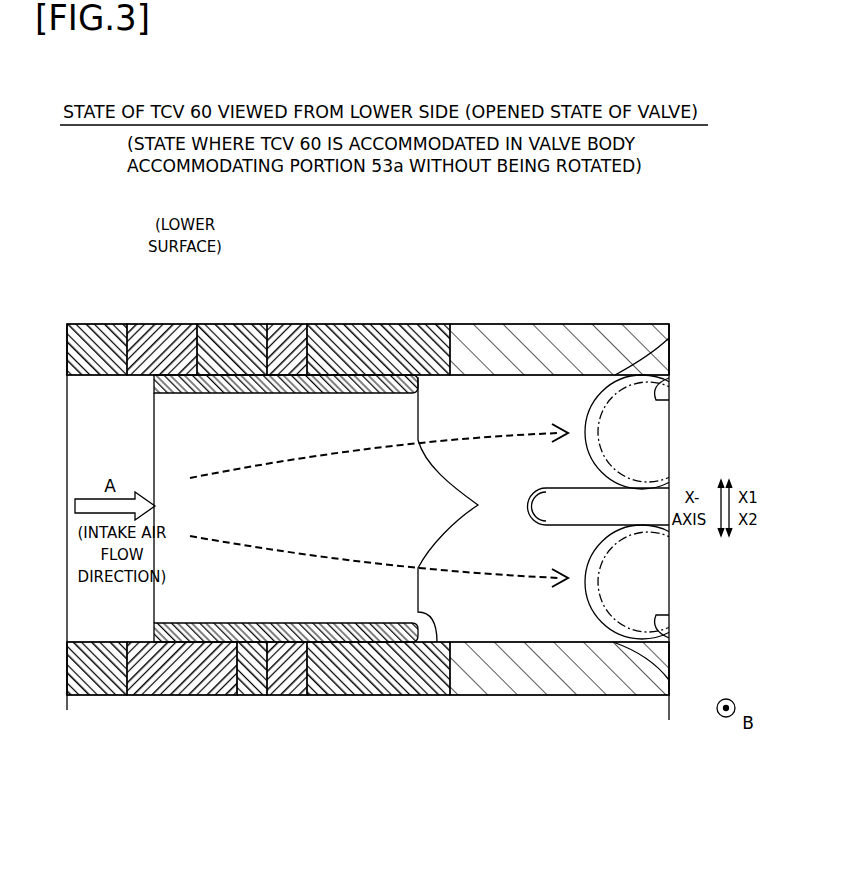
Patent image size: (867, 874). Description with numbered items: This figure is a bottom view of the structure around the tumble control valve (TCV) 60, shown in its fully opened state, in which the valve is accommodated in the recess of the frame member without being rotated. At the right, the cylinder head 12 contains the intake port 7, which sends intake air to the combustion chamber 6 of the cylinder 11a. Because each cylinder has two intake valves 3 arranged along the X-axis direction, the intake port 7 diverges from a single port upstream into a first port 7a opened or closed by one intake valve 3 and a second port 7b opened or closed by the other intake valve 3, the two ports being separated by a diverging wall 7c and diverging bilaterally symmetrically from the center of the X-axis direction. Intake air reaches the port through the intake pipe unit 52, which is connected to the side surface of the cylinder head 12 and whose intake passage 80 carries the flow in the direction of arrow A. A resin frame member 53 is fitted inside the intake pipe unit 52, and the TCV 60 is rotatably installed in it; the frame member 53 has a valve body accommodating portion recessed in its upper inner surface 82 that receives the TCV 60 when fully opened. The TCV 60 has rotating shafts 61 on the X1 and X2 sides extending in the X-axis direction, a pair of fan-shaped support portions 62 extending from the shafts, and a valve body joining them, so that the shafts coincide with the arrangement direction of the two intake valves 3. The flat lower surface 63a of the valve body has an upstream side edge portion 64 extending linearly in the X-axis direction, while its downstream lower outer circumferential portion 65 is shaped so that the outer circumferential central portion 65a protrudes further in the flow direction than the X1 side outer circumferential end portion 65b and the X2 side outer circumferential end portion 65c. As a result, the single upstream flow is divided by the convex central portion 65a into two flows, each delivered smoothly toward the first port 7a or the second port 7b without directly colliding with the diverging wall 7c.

The intake valve 3 is at (672, 381).
The combustion chamber 6 is at (648, 656).
The intake port 7 is at (560, 379).
The first port 7a is at (669, 400).
The second port 7b is at (669, 621).
The diverging wall 7c is at (534, 525).
The cylinder 11a is at (641, 356).
The cylinder head 12 is at (590, 333).
The intake pipe unit 52 is at (83, 346).
The frame member 53 is at (348, 324).
The tumble control valve (TCV) 60 is at (372, 412).
The rotating shaft 61 is at (287, 324).
The support portion 62 is at (241, 324).
The lower surface 63a is at (216, 437).
The upstream side edge portion 64 is at (153, 421).
The lower outer circumferential portion 65 is at (437, 464).
The outer circumferential central portion 65a is at (478, 505).
The X1 side outer circumferential end portion 65b is at (420, 400).
The X2 side outer circumferential end portion 65c is at (434, 655).
The intake passage 80 is at (105, 450).
The upper inner surface 82 is at (139, 449).